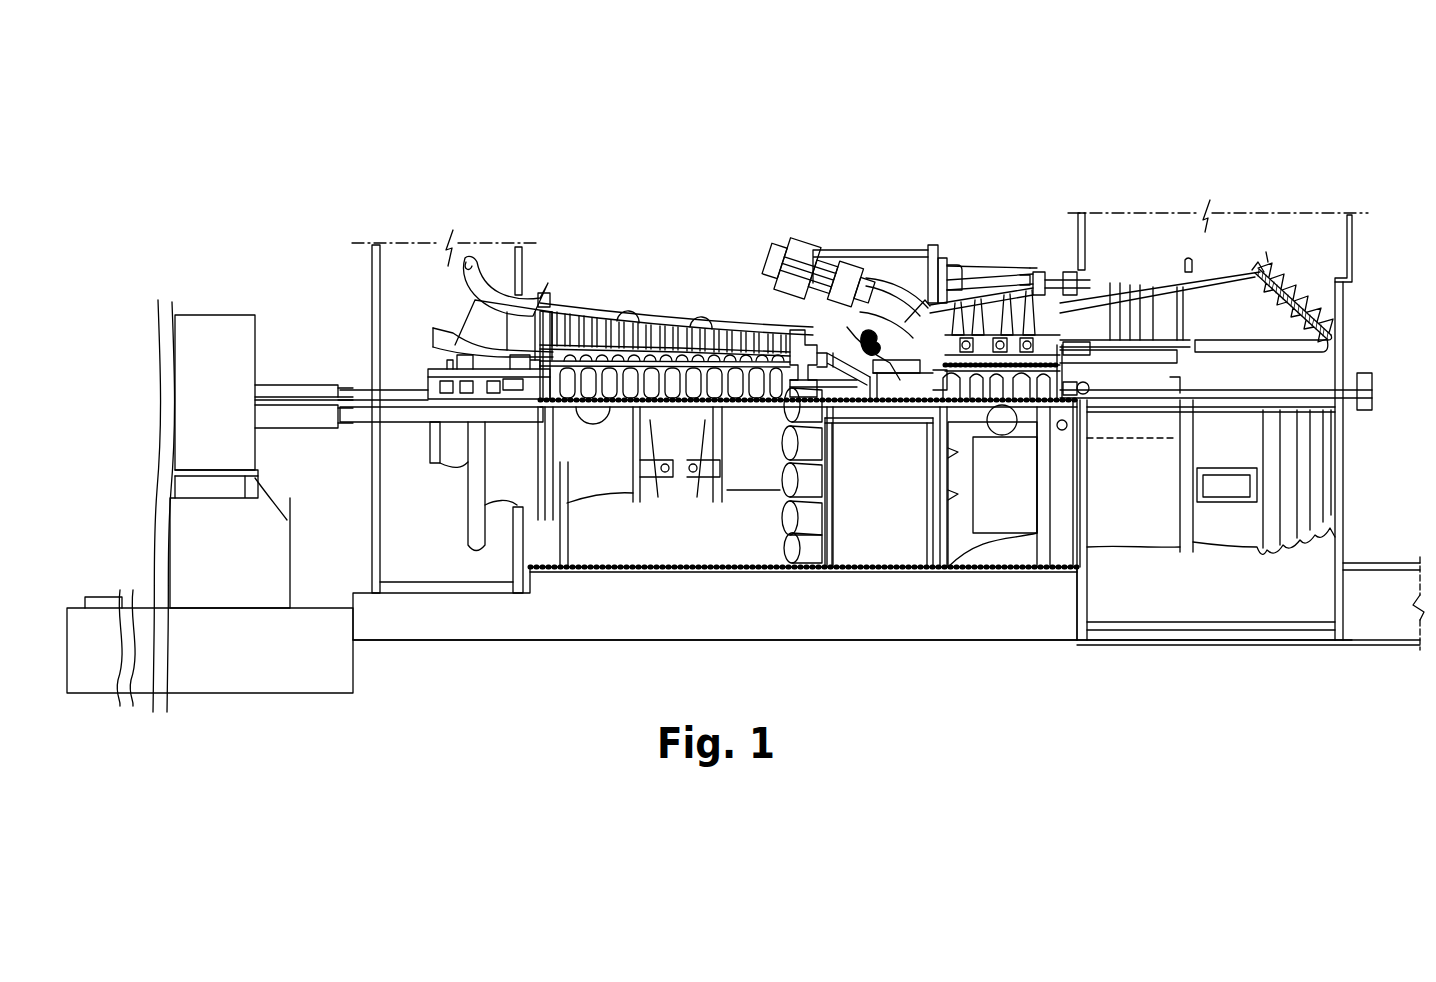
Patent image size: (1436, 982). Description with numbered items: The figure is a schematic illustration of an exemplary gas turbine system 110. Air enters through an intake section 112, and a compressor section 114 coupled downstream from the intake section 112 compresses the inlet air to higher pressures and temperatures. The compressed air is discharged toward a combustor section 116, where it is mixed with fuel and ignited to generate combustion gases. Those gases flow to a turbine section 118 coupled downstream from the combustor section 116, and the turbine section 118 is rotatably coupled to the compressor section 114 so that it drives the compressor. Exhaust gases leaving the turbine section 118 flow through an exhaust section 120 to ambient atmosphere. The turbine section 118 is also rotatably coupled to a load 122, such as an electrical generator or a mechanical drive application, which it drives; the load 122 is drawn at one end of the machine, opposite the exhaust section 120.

The gas turbine system 110 is at (254, 114).
The intake section 112 is at (428, 263).
The compressor section 114 is at (657, 322).
The combustor section 116 is at (877, 240).
The turbine section 118 is at (984, 275).
The exhaust section 120 is at (1210, 272).
The load 122 is at (215, 340).